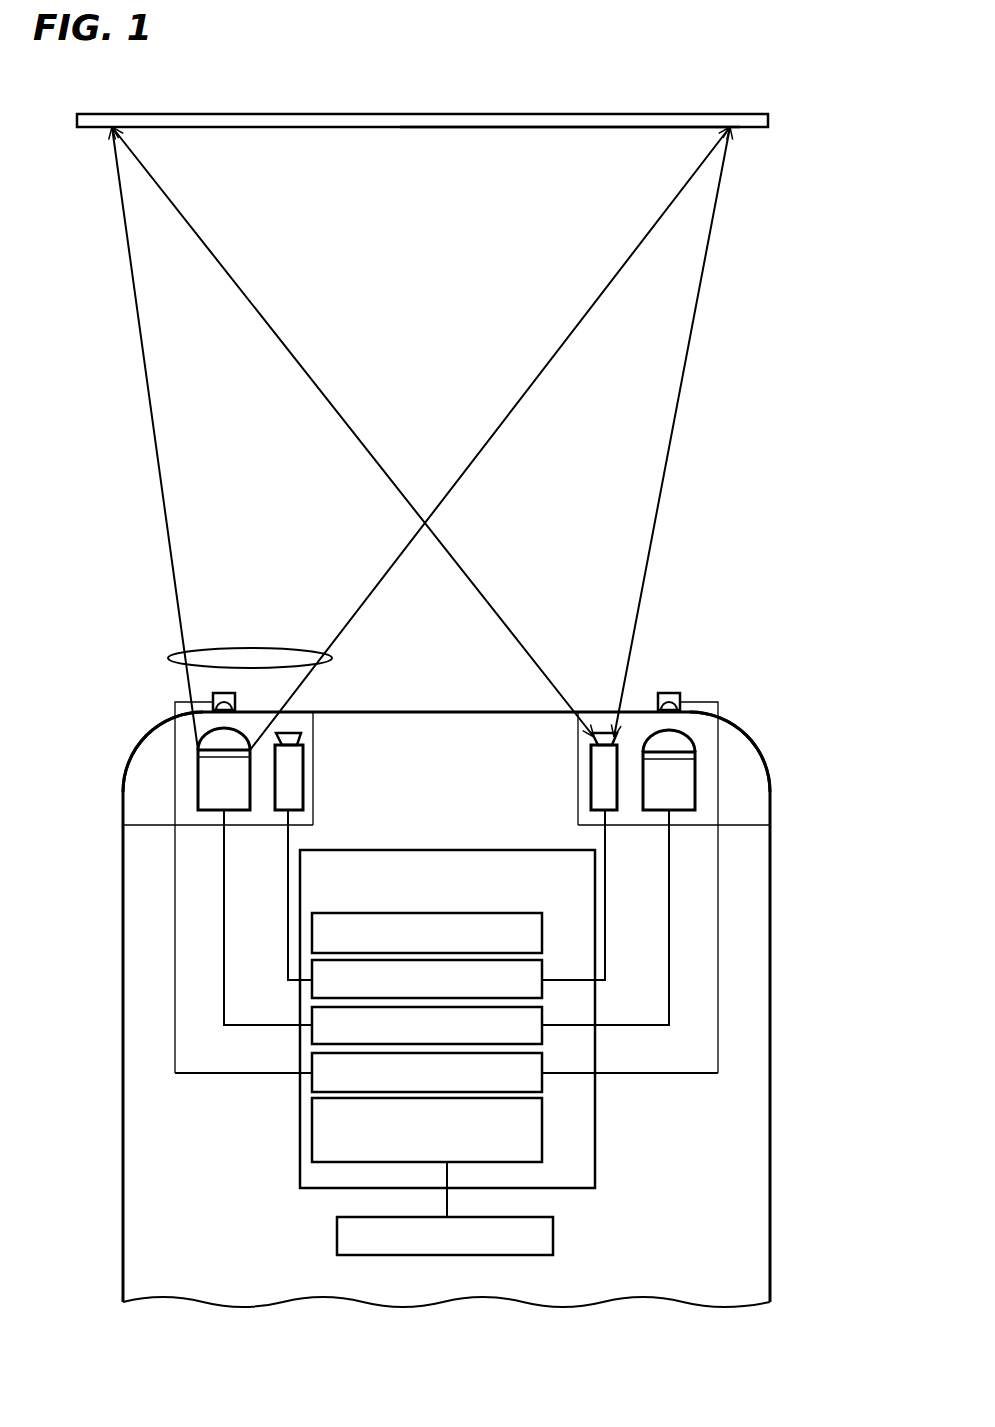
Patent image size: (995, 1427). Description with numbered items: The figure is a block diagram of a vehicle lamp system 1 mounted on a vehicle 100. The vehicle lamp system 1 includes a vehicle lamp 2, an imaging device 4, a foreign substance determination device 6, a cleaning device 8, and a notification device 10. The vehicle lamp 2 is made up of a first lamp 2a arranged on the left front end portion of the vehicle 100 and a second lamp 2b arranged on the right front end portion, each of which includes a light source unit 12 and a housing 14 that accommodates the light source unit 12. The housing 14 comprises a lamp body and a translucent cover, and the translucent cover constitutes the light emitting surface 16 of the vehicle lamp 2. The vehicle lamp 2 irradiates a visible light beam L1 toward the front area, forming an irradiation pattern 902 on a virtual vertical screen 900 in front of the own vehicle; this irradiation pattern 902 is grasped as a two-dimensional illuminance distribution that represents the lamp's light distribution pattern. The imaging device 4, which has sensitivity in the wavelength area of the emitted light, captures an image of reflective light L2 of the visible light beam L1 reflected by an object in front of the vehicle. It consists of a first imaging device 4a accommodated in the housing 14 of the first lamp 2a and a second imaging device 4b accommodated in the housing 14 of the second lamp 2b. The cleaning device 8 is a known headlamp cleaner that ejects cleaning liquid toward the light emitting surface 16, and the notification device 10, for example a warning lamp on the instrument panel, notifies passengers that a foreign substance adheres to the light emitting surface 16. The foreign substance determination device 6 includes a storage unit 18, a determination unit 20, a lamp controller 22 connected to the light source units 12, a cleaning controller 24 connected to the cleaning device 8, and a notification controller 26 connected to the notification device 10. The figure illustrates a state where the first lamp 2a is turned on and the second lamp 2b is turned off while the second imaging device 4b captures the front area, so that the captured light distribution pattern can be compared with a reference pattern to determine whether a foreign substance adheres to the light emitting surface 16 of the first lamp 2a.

The vehicle lamp system 1 is at (623, 1180).
The vehicle lamp 2 is at (783, 688).
The first lamp 2a is at (123, 785).
The second lamp 2b is at (772, 783).
The imaging device 4 is at (446, 817).
The first imaging device 4a is at (303, 775).
The second imaging device 4b is at (591, 773).
The foreign substance determination device 6 is at (446, 1019).
The cleaning device 8 is at (222, 693).
The notification device 10 is at (553, 1230).
The light source unit 12 is at (215, 812).
The housing 14 is at (145, 826).
The light emitting surface 16 is at (295, 712).
The storage unit 18 is at (542, 928).
The determination unit 20 is at (542, 975).
The lamp controller 22 is at (542, 1022).
The cleaning controller 24 is at (542, 1067).
The notification controller 26 is at (450, 1126).
The vehicle 100 is at (770, 1268).
The virtual vertical screen 900 is at (768, 122).
The irradiation pattern 902 is at (650, 127).
The visible light beam L1 is at (175, 655).
The reflective light L2 is at (648, 554).